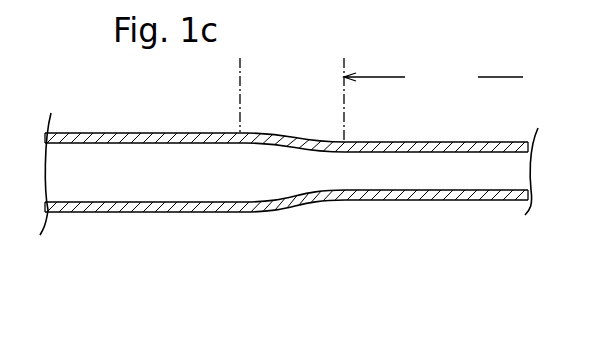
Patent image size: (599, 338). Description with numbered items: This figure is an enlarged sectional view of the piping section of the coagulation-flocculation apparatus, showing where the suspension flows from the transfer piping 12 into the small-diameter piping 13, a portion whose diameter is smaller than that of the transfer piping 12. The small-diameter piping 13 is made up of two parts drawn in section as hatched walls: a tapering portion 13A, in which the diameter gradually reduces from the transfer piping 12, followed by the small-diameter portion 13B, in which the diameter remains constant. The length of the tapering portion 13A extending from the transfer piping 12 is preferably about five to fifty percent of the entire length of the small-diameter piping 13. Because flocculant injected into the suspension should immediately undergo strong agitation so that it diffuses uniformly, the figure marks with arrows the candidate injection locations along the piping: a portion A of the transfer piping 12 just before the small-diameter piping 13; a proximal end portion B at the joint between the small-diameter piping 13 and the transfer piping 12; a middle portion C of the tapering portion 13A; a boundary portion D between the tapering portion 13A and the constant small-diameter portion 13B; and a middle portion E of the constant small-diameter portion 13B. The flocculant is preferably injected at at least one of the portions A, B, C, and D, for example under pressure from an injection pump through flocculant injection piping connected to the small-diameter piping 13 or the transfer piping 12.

The transfer piping 12 is at (115, 133).
The small-diameter piping 13 is at (458, 200).
The tapering portion 13A is at (332, 81).
The small-diameter portion 13B is at (433, 78).
The portion of the transfer piping just before the small-diameter piping A is at (133, 212).
The proximal end portion B is at (240, 212).
The middle portion of the tapering portion C is at (295, 207).
The boundary portion D is at (345, 201).
The middle portion of the constant small-diameter portion E is at (415, 200).